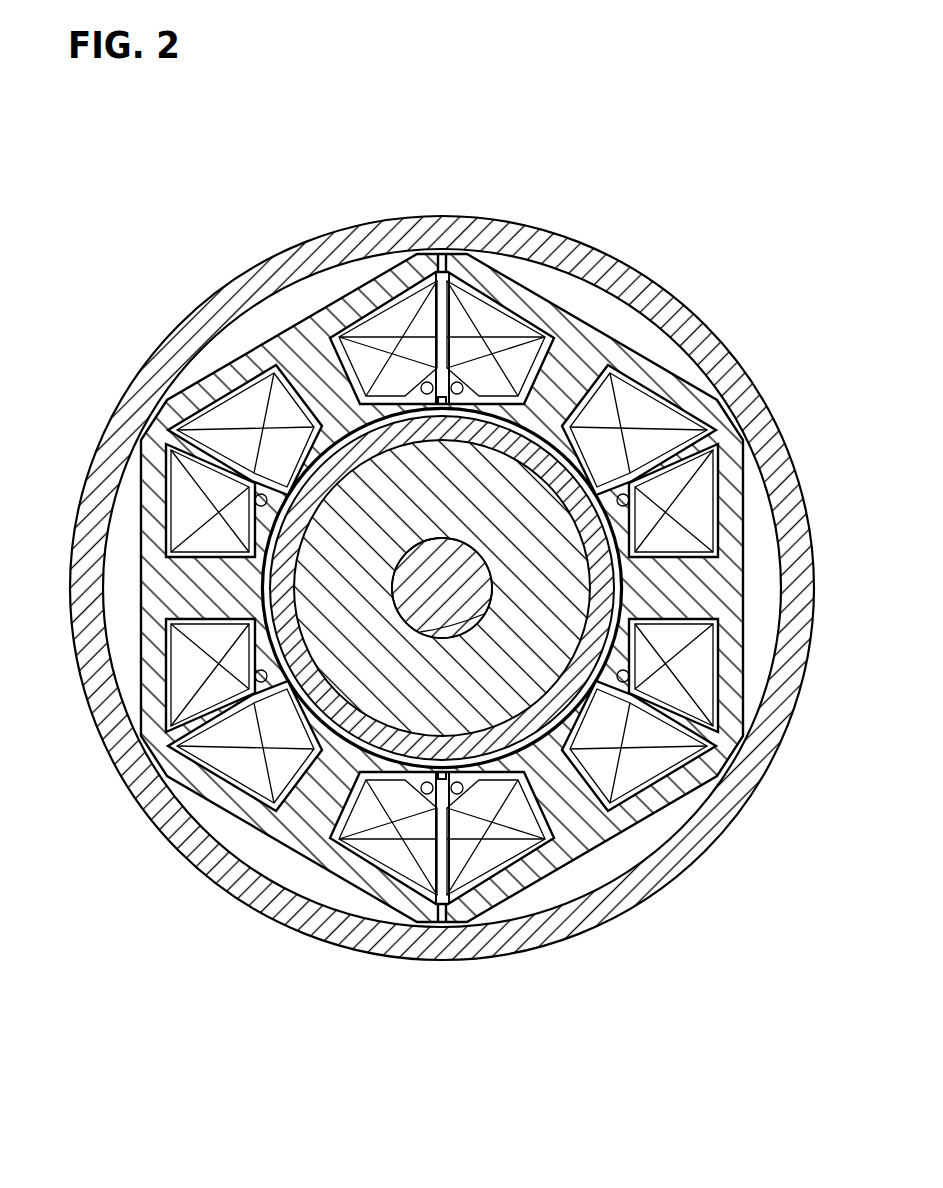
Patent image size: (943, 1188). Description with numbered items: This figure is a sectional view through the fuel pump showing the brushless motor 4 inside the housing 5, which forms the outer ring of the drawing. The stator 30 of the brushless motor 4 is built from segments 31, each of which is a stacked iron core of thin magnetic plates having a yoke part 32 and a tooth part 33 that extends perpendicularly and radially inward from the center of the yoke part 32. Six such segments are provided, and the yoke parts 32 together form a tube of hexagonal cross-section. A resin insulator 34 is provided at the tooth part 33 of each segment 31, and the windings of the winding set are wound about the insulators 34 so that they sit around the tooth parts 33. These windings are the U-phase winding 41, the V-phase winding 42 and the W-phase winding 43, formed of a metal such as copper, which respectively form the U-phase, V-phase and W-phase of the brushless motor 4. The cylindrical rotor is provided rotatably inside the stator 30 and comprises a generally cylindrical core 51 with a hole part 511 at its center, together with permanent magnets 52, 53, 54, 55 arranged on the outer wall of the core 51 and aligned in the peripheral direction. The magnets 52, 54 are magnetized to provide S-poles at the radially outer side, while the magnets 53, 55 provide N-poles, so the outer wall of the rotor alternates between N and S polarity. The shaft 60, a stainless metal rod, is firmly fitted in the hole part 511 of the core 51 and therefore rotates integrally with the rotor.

The brushless motor 4 is at (376, 270).
The housing 5 is at (440, 215).
The stator 30 is at (730, 372).
The segment 31 is at (555, 318).
The yoke part 32 is at (510, 300).
The tooth part 33 is at (600, 340).
The insulator 34 is at (478, 290).
The U-phase winding 41 is at (375, 325).
The V-phase winding 42 is at (690, 665).
The W-phase winding 43 is at (632, 407).
The core 51 is at (460, 740).
The permanent magnet 52 is at (452, 445).
The permanent magnet 53 is at (293, 590).
The permanent magnet 54 is at (440, 738).
The permanent magnet 55 is at (487, 600).
The hole part 511 is at (425, 628).
The shaft 60 is at (480, 588).